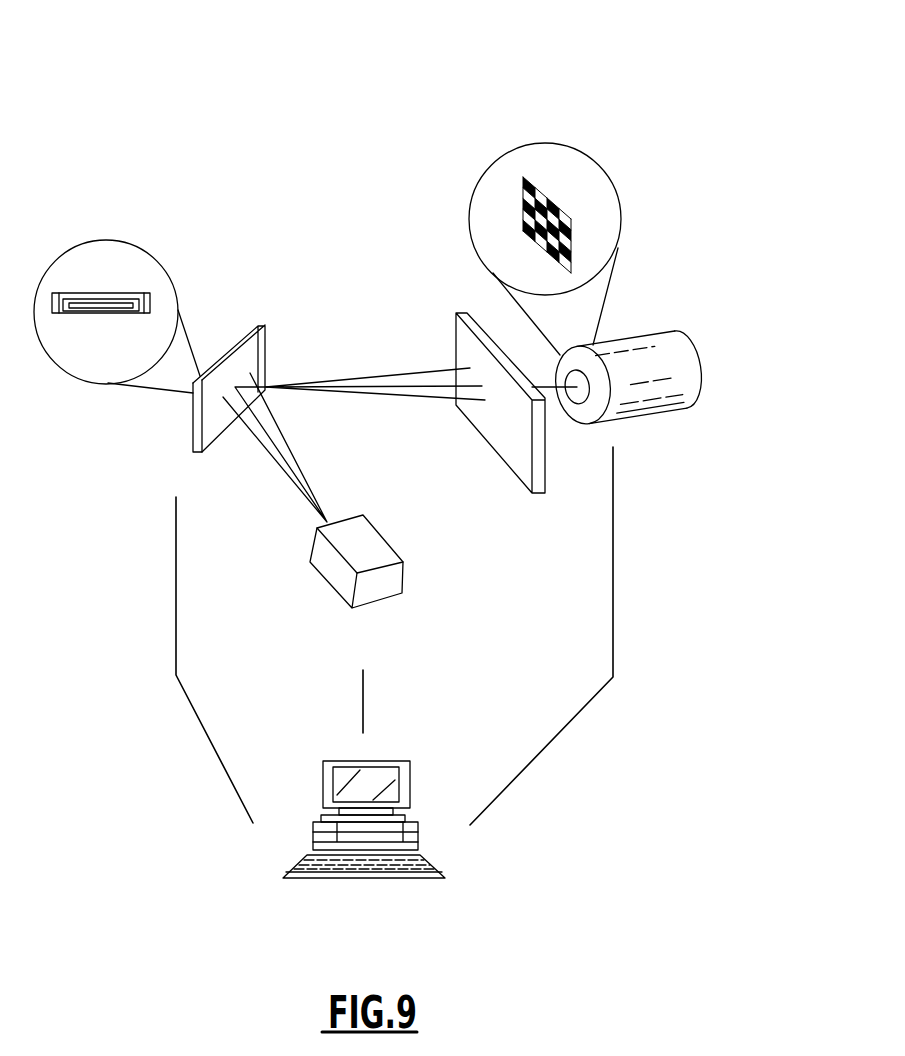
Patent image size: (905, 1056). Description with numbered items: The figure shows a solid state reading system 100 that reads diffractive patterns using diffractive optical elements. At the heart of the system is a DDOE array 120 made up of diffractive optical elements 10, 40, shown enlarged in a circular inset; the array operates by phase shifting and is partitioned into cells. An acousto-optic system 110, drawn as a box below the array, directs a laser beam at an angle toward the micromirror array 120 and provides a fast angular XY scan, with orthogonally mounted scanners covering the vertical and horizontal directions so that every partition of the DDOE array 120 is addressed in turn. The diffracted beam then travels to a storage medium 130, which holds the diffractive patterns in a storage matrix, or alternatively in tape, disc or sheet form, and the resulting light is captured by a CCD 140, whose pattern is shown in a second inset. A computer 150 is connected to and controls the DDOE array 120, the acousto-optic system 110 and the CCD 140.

The solid state reading system 100 is at (688, 108).
The diffractive optical element 10 is at (141, 301).
The diffractive optical element 40 is at (137, 262).
The acousto-optic system 110 is at (363, 535).
The DDOE array 120 is at (258, 356).
The storage medium 130 is at (515, 458).
The CCD 140 is at (683, 362).
The computer 150 is at (312, 836).